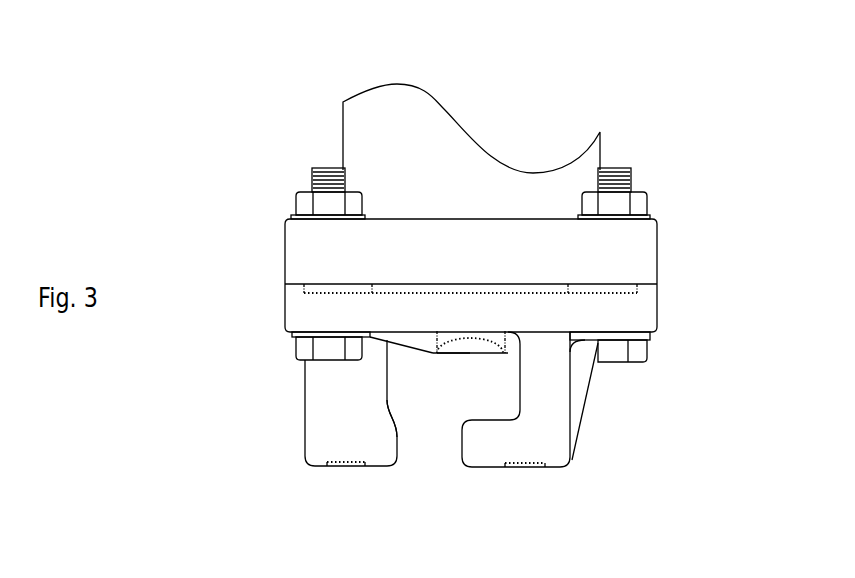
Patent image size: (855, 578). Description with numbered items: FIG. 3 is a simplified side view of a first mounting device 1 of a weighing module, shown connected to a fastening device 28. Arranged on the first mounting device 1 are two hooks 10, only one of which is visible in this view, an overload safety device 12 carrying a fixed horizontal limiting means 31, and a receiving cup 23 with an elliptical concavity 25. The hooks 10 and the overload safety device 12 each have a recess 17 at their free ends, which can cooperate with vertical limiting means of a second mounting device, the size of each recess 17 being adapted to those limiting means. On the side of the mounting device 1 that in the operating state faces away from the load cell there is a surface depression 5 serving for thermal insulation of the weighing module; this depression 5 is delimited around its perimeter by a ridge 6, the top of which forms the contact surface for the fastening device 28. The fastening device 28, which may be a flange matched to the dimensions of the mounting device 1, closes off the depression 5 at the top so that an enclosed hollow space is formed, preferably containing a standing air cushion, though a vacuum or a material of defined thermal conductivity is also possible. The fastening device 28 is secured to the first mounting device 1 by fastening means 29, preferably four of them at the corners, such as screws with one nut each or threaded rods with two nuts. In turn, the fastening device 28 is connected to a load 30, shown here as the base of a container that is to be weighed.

The first mounting device 1 is at (335, 315).
The surface depression 5 is at (322, 281).
The ridge 6 is at (632, 313).
The hook 10 is at (543, 394).
The overload safety device 12 is at (335, 402).
The recess 17 is at (337, 466).
The receiving cup 23 is at (430, 361).
The elliptical concavity 25 is at (468, 353).
The fastening device 28 is at (615, 258).
The fastening means 29 is at (622, 205).
The load 30 is at (417, 142).
The horizontal limiting means 31 is at (388, 438).